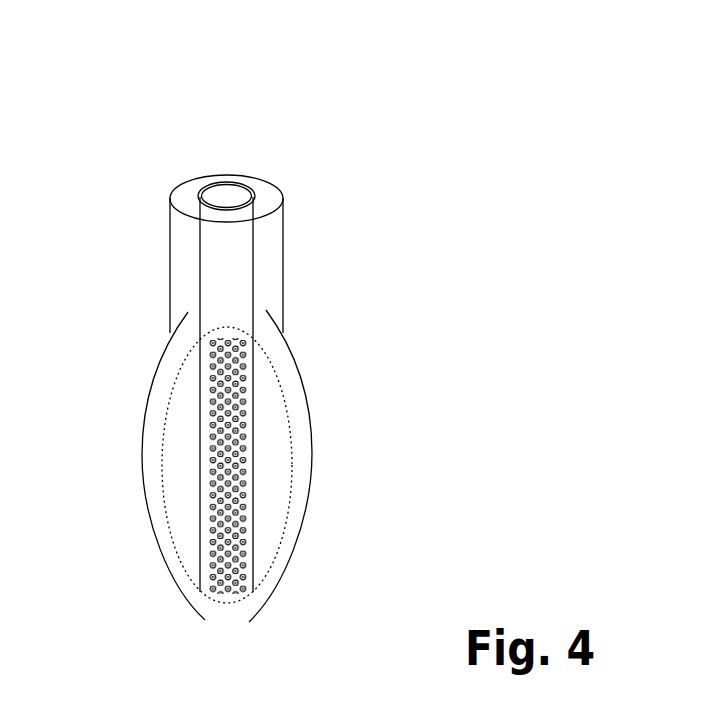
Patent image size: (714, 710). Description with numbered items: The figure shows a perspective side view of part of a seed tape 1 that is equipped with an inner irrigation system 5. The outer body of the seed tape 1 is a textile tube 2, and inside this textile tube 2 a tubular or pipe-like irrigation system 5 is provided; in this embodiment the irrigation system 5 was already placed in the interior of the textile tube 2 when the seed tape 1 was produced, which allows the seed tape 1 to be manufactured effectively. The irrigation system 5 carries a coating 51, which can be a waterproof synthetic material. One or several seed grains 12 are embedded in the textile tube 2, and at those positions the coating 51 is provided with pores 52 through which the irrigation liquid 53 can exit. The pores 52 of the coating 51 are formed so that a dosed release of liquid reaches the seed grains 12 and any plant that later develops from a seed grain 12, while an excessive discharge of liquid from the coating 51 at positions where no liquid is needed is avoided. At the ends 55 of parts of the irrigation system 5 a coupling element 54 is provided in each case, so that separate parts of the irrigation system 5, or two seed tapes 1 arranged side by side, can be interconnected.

The seed tape 1 is at (276, 163).
The textile tube 2 is at (285, 280).
The irrigation system 5 is at (215, 193).
The seed grain 12 is at (292, 435).
The coating 51 is at (253, 203).
The pores 52 is at (240, 478).
The irrigation liquid 53 is at (225, 183).
The coupling element 54 is at (203, 194).
The ends 55 is at (198, 196).